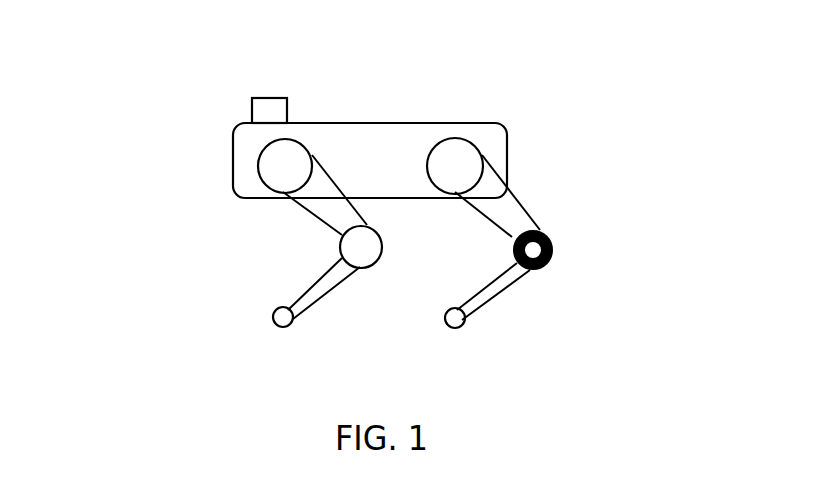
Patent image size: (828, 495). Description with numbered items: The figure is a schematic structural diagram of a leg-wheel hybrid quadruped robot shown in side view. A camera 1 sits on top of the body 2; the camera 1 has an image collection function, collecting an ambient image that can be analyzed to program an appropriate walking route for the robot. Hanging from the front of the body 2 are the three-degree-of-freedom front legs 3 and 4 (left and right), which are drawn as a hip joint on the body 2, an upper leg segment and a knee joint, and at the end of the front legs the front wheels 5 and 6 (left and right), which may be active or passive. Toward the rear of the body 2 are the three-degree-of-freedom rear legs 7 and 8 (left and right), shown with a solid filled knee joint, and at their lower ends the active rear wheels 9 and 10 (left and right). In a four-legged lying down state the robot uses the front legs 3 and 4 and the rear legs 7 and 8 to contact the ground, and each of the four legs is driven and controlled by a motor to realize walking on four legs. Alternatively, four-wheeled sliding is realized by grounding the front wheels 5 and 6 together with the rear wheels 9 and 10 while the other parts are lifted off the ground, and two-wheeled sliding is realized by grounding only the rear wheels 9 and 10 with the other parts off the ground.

The camera 1 is at (205, 63).
The body 2 is at (296, 140).
The three-degree-of-freedom front leg 3 is at (230, 218).
The three-degree-of-freedom front leg 4 is at (230, 218).
The front wheel 5 is at (316, 318).
The front wheel 6 is at (316, 318).
The three-degree-of-freedom rear leg 7 is at (554, 187).
The three-degree-of-freedom rear leg 8 is at (554, 187).
The rear wheel 9 is at (566, 311).
The rear wheel 10 is at (566, 311).